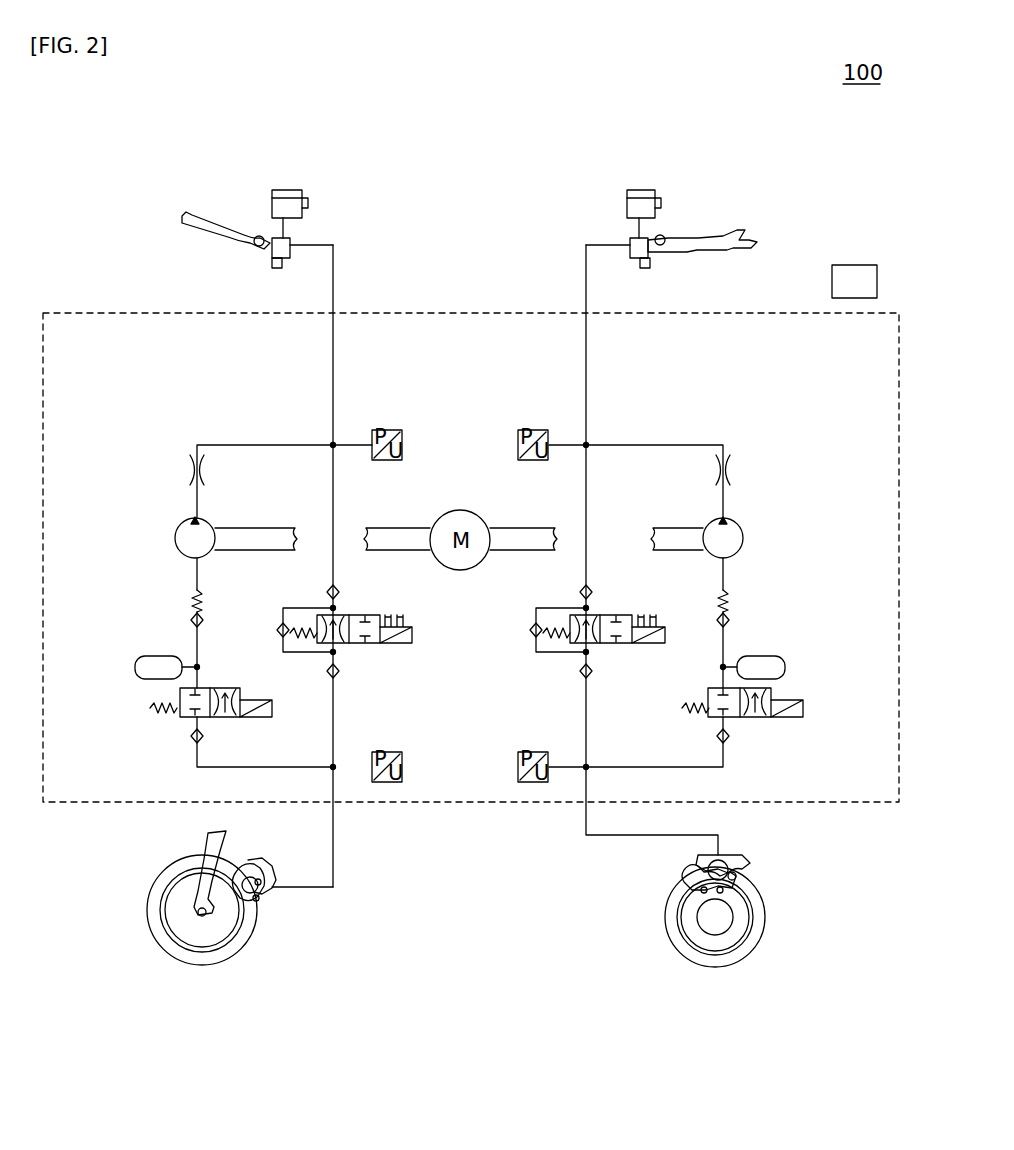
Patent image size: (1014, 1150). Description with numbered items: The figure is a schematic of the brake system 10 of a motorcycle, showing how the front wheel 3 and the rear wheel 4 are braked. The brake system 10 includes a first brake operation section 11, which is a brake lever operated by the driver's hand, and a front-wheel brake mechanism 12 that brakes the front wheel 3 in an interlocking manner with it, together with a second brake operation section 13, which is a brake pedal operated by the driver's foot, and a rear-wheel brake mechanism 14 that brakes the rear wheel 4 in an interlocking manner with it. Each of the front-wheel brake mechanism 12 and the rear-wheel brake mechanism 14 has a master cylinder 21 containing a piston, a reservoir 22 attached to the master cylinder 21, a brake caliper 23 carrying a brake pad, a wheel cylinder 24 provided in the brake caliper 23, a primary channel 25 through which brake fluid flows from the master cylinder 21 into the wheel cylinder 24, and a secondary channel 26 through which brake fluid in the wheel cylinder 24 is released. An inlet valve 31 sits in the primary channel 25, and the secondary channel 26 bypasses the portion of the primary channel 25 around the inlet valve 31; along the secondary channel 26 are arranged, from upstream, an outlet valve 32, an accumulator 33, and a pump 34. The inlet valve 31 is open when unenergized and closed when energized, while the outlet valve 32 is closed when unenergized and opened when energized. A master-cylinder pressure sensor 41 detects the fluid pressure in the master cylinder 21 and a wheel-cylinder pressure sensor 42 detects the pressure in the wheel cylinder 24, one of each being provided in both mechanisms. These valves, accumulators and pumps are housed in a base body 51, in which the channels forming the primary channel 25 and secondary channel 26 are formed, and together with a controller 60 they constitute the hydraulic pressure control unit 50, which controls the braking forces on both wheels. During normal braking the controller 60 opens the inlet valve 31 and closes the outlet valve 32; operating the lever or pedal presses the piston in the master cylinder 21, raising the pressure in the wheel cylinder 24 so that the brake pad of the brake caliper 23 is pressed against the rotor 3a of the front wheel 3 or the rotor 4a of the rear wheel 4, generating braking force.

The brake system 10 is at (130, 207).
The first brake operation section 11 is at (210, 228).
The front-wheel brake mechanism 12 is at (373, 135).
The second brake operation section 13 is at (738, 230).
The rear-wheel brake mechanism 14 is at (546, 135).
The master cylinder 21 is at (283, 264).
The reservoir 22 is at (286, 190).
The brake caliper 23 is at (258, 863).
The wheel cylinder 24 is at (276, 894).
The primary channel 25 is at (333, 385).
The secondary channel 26 is at (263, 445).
The inlet valve 31 is at (371, 645).
The outlet valve 32 is at (226, 688).
The accumulator 33 is at (158, 656).
The pump 34 is at (174, 538).
The master-cylinder pressure sensor 41 is at (403, 450).
The wheel-cylinder pressure sensor 42 is at (403, 772).
The hydraulic pressure control unit 50 is at (799, 234).
The base body 51 is at (70, 313).
The controller 60 is at (857, 252).
The front wheel 3 is at (208, 992).
The rotor 3a is at (240, 942).
The rear wheel 4 is at (721, 992).
The rotor 4a is at (675, 937).